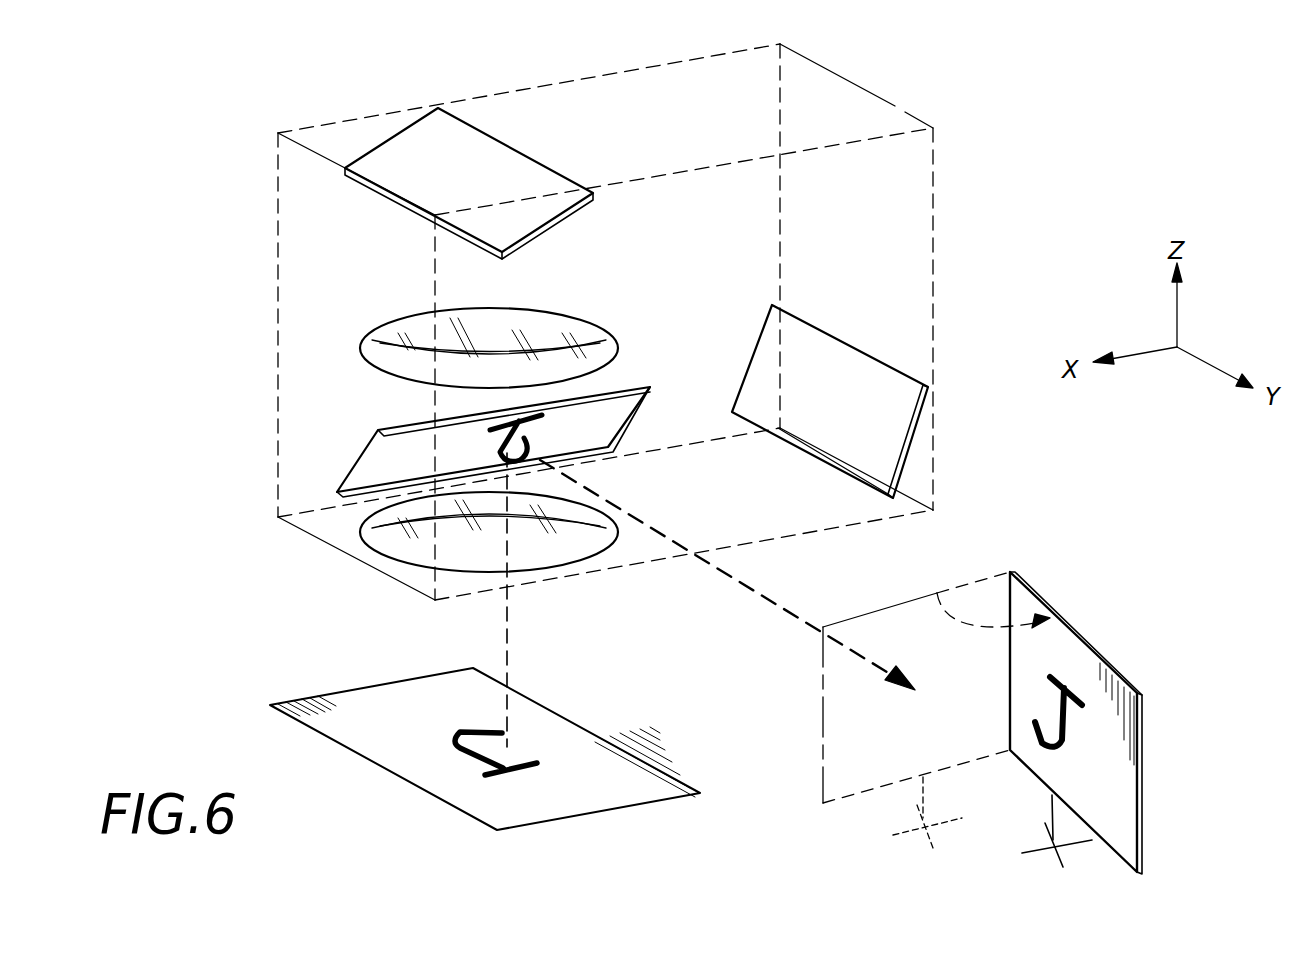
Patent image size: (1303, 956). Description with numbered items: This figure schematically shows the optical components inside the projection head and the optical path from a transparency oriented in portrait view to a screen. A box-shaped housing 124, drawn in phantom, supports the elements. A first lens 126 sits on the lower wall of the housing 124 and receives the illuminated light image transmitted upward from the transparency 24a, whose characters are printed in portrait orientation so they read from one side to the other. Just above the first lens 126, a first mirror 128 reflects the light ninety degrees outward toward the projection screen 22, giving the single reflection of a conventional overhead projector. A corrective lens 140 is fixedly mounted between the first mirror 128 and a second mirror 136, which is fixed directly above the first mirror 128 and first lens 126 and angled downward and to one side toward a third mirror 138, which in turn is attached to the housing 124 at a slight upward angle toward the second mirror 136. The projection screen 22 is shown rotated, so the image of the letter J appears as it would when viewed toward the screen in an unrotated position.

The housing 124 is at (900, 108).
The second mirror 136 is at (390, 138).
The corrective lens 140 is at (388, 322).
The first mirror 128 is at (345, 473).
The first lens 126 is at (365, 542).
The third mirror 138 is at (885, 362).
The projection screen 22 is at (1097, 655).
The transparency 24a is at (413, 784).